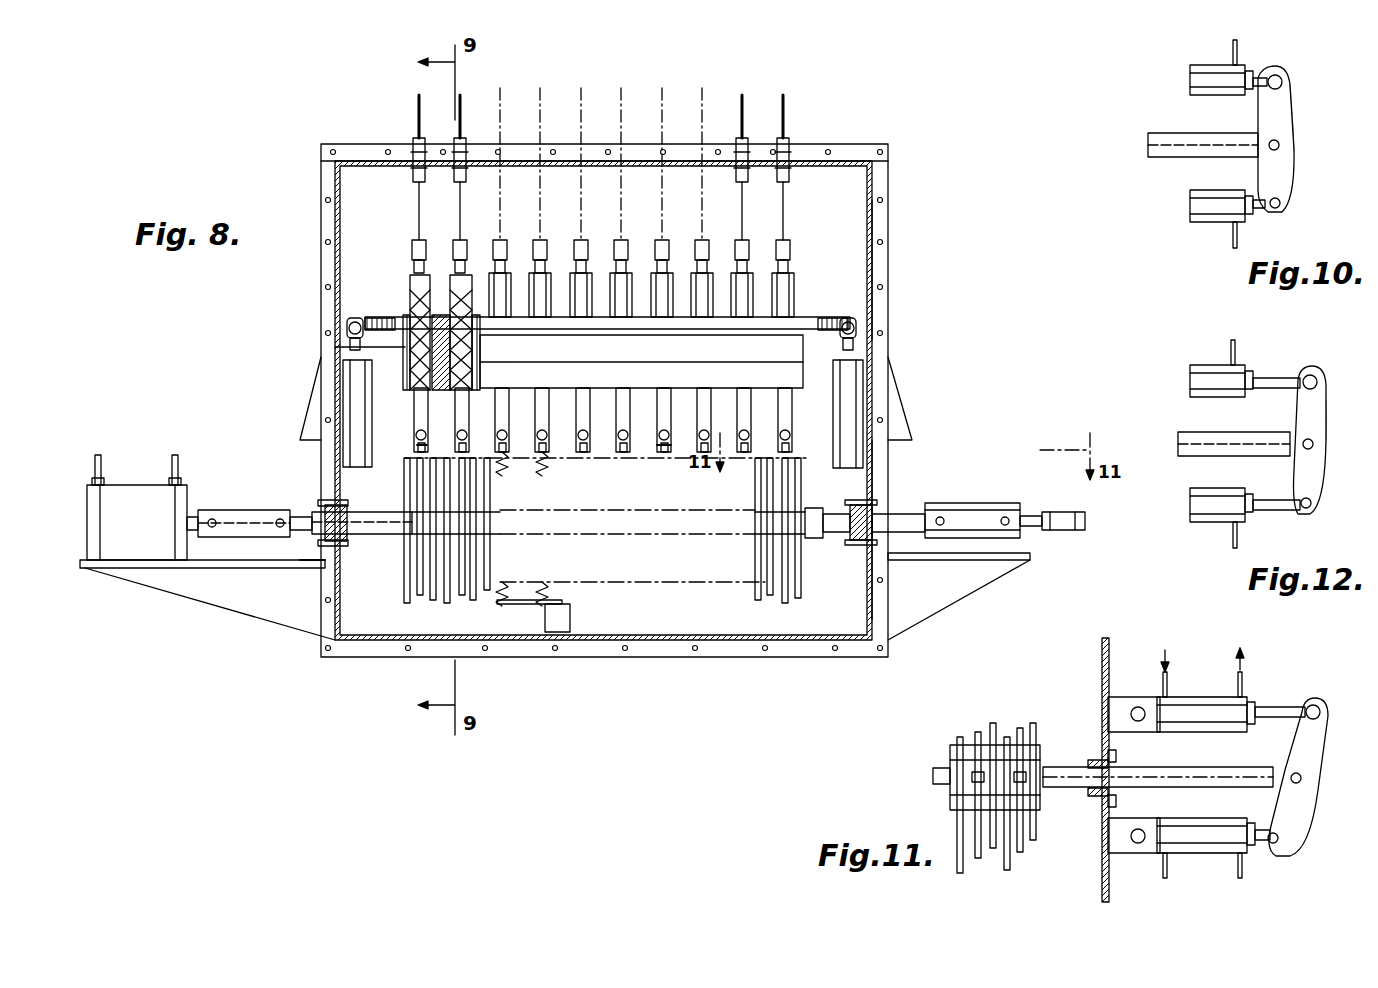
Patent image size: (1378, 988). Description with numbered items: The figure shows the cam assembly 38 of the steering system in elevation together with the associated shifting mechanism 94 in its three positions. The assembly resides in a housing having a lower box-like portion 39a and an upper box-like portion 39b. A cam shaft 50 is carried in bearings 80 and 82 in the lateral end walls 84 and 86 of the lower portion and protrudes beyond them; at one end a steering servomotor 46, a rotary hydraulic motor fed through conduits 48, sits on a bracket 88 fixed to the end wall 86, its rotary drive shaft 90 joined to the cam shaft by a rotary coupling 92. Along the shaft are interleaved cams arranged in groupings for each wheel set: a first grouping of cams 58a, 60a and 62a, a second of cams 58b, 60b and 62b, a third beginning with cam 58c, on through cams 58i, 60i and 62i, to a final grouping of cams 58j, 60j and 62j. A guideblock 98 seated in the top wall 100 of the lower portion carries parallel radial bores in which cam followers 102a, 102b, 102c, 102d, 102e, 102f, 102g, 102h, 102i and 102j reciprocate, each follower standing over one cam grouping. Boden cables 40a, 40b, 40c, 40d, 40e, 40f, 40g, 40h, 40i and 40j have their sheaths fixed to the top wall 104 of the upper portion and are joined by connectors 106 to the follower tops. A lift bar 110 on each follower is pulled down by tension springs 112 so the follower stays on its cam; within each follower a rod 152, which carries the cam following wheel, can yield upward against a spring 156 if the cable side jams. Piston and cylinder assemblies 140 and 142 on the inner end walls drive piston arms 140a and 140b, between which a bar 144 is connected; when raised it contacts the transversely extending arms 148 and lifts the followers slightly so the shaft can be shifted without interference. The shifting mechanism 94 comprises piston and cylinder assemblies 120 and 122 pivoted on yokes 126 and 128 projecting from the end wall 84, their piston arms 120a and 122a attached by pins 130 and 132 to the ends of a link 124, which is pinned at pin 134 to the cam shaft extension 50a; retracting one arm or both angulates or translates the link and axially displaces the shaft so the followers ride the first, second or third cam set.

In FIG. 8, the cam assembly 38 is at (607, 620).
In FIG. 8, the lower box-like portion 39a is at (875, 462).
In FIG. 8, the upper box-like portion 39b is at (884, 230).
In FIG. 8, the boden cable 40a is at (415, 148).
In FIG. 8, the boden cable 40b is at (462, 148).
In FIG. 8, the boden cable 40c is at (503, 148).
In FIG. 8, the boden cable 40d is at (542, 148).
In FIG. 8, the boden cable 40e is at (582, 150).
In FIG. 8, the boden cable 40f is at (622, 150).
In FIG. 8, the boden cable 40g is at (662, 150).
In FIG. 8, the boden cable 40h is at (703, 150).
In FIG. 8, the boden cable 40i is at (745, 148).
In FIG. 8, the boden cable 40j is at (788, 148).
In FIG. 8, the steering servomotor 46 is at (100, 523).
In FIG. 8, the conduits 48 is at (175, 458).
In FIG. 8, the cam shaft 50 is at (360, 534).
In FIG. 11, the cam shaft 50 is at (1050, 760).
In FIG. 10, the cam shaft extension 50a is at (1170, 133).
In FIG. 12, the cam shaft extension 50a is at (1205, 434).
In FIG. 11, the cam shaft extension 50a is at (1190, 775).
In FIG. 8, the cam 58a is at (404, 600).
In FIG. 8, the cam 58b is at (447, 606).
In FIG. 8, the cam 58c is at (548, 630).
In FIG. 11, the cam 58i is at (958, 870).
In FIG. 8, the cam 58j is at (758, 604).
In FIG. 11, the cam 58j is at (1007, 872).
In FIG. 8, the cam 60a is at (420, 598).
In FIG. 8, the cam 60b is at (462, 598).
In FIG. 11, the cam 60i is at (978, 860).
In FIG. 8, the cam 60j is at (770, 600).
In FIG. 11, the cam 60j is at (1020, 854).
In FIG. 8, the cam 62a is at (433, 603).
In FIG. 8, the cam 62b is at (473, 603).
In FIG. 11, the cam 62i is at (993, 850).
In FIG. 8, the cam 62j is at (800, 602).
In FIG. 11, the cam 62j is at (1033, 842).
In FIG. 8, the bearing 80 is at (862, 508).
In FIG. 11, the bearing 80 is at (1098, 762).
In FIG. 8, the bearing 82 is at (328, 540).
In FIG. 8, the end wall 84 is at (890, 640).
In FIG. 11, the end wall 84 is at (1108, 650).
In FIG. 8, the end wall 86 is at (322, 600).
In FIG. 8, the bracket 88 is at (205, 600).
In FIG. 8, the rotary drive shaft 90 is at (192, 515).
In FIG. 8, the rotary coupling 92 is at (243, 510).
In FIG. 8, the shifting mechanism 94 is at (975, 500).
In FIG. 10, the shifting mechanism 94 is at (1298, 120).
In FIG. 12, the shifting mechanism 94 is at (1330, 435).
In FIG. 11, the shifting mechanism 94 is at (1192, 665).
In FIG. 8, the guideblock 98 is at (790, 368).
In FIG. 8, the top wall 100 is at (875, 330).
In FIG. 8, the cam follower 102a is at (410, 283).
In FIG. 8, the cam follower 102b is at (450, 278).
In FIG. 8, the cam follower 102c is at (503, 320).
In FIG. 8, the cam follower 102d is at (541, 320).
In FIG. 8, the cam follower 102e is at (582, 280).
In FIG. 8, the cam follower 102f is at (625, 320).
In FIG. 8, the cam follower 102g is at (660, 280).
In FIG. 8, the cam follower 102h is at (702, 320).
In FIG. 8, the cam follower 102i is at (741, 320).
In FIG. 11, the cam follower 102i is at (975, 770).
In FIG. 8, the cam follower 102j is at (794, 290).
In FIG. 11, the cam follower 102j is at (1018, 770).
In FIG. 8, the top wall 104 is at (850, 155).
In FIG. 8, the connectors 106 is at (412, 248).
In FIG. 8, the lift bar 110 is at (414, 435).
In FIG. 8, the springs 112 is at (505, 472).
In FIG. 10, the piston and cylinder assembly 120 is at (1205, 68).
In FIG. 12, the piston and cylinder assembly 120 is at (1205, 366).
In FIG. 11, the piston and cylinder assembly 120 is at (1205, 697).
In FIG. 10, the piston arm 120a is at (1262, 74).
In FIG. 12, the piston arm 120a is at (1265, 378).
In FIG. 11, the piston arm 120a is at (1280, 707).
In FIG. 10, the piston and cylinder assembly 122 is at (1195, 200).
In FIG. 12, the piston and cylinder assembly 122 is at (1195, 498).
In FIG. 11, the piston and cylinder assembly 122 is at (1200, 853).
In FIG. 10, the piston arm 122a is at (1262, 210).
In FIG. 12, the piston arm 122a is at (1270, 512).
In FIG. 11, the piston arm 122a is at (1265, 842).
In FIG. 10, the link 124 is at (1263, 116).
In FIG. 12, the link 124 is at (1298, 410).
In FIG. 11, the link 124 is at (1290, 758).
In FIG. 11, the yoke 126 is at (1126, 697).
In FIG. 11, the yoke 128 is at (1126, 853).
In FIG. 10, the pin 130 is at (1282, 78).
In FIG. 12, the pin 130 is at (1318, 380).
In FIG. 11, the pin 130 is at (1316, 705).
In FIG. 10, the pin 132 is at (1278, 210).
In FIG. 12, the pin 132 is at (1300, 500).
In FIG. 11, the pin 132 is at (1278, 845).
In FIG. 10, the pin 134 is at (1268, 150).
In FIG. 12, the pin 134 is at (1300, 448).
In FIG. 11, the pin 134 is at (1290, 782).
In FIG. 8, the piston and cylinder assembly 140 is at (345, 400).
In FIG. 8, the piston arm 140a is at (348, 332).
In FIG. 8, the piston arm 140b is at (862, 335).
In FIG. 8, the piston and cylinder assembly 142 is at (865, 400).
In FIG. 8, the bar 144 is at (365, 322).
In FIG. 8, the transversely extending arm 148 is at (414, 266).
In FIG. 8, the rod 152 is at (787, 420).
In FIG. 8, the spring 156 is at (418, 452).